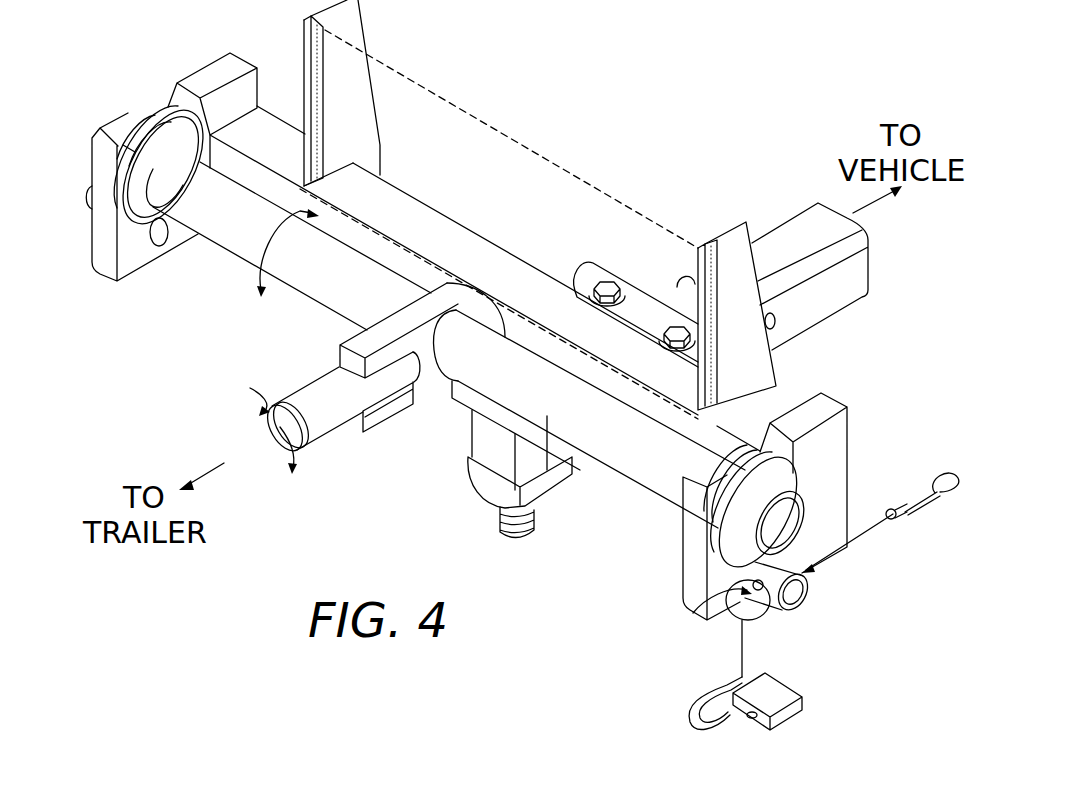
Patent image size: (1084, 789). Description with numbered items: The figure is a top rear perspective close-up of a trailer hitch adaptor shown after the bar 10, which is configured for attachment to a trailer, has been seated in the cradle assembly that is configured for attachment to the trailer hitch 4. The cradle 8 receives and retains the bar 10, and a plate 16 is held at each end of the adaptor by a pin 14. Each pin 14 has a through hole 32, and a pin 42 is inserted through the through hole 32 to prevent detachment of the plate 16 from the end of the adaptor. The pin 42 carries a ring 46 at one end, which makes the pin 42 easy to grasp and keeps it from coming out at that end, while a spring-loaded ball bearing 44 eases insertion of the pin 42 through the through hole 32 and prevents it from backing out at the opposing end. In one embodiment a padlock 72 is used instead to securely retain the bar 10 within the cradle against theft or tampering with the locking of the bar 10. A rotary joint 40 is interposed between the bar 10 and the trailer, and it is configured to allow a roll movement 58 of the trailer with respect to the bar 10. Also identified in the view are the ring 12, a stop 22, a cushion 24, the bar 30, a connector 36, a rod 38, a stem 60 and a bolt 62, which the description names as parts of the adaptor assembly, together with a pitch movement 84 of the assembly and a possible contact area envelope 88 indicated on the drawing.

The trailer hitch 4 is at (545, 492).
The cradle 8 is at (98, 238).
The bar 10 is at (334, 296).
The ring 12 is at (166, 239).
The pin 14 is at (85, 197).
The plate 16 is at (758, 612).
The stop 22 is at (362, 15).
The cushion 24 is at (306, 62).
The bar 30 is at (428, 214).
The through hole 32 is at (693, 613).
The connector 36 is at (362, 428).
The rod 38 is at (338, 378).
The rotary joint 40 is at (290, 432).
The pin 42 is at (920, 504).
The spring-loaded ball bearing 44 is at (891, 509).
The ring 46 is at (946, 480).
The roll movement 58 is at (249, 389).
The stem 60 is at (480, 435).
The bolt 62 is at (500, 516).
The padlock 72 is at (778, 706).
The pitch movement 84 is at (254, 258).
The possible contact area envelope 88 is at (518, 143).